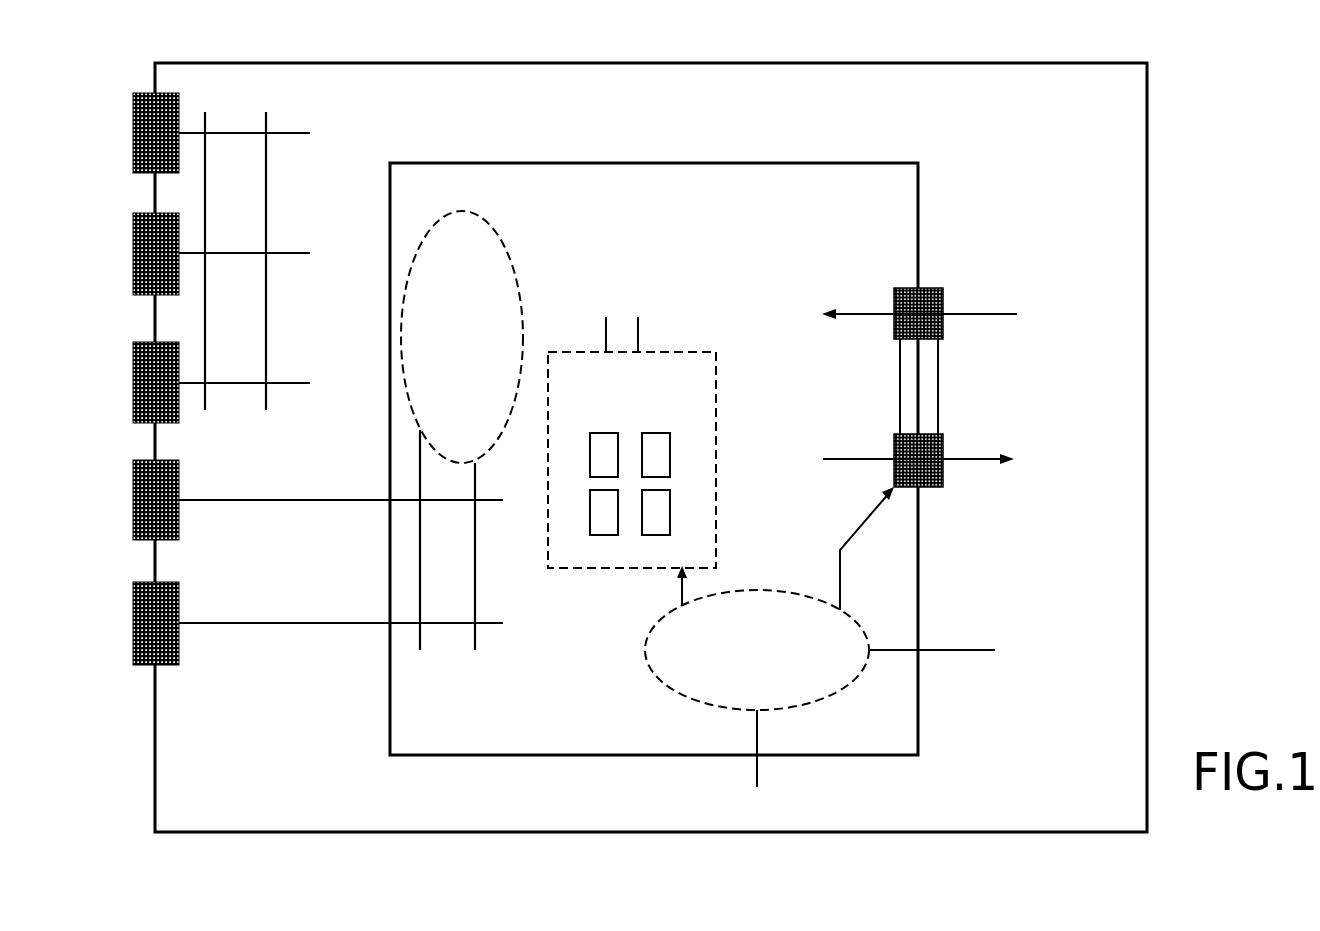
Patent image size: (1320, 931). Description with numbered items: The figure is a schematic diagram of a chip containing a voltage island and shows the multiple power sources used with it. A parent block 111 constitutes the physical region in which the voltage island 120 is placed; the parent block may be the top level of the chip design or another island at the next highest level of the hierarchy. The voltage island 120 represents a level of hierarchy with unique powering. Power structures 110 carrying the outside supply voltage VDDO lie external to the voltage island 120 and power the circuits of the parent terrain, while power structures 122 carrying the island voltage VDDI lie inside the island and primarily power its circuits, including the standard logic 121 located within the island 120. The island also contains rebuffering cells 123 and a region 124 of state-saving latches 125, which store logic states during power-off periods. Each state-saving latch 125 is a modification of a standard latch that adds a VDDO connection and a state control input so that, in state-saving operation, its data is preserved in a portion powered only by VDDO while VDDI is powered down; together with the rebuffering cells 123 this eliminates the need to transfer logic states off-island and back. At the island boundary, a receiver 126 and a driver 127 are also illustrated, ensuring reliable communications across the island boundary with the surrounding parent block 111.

The parent block 111 is at (776, 62).
The power structures (VDDO) 110 is at (473, 98).
The voltage island 120 is at (688, 163).
The standard logic 121 is at (505, 245).
The power structures (VDDI) 122 is at (513, 672).
The rebuffering cells 123 is at (768, 588).
The region of state-saving latches 124 is at (676, 447).
The state-saving latch 125 is at (668, 458).
The receiver 126 is at (897, 287).
The driver 127 is at (943, 438).